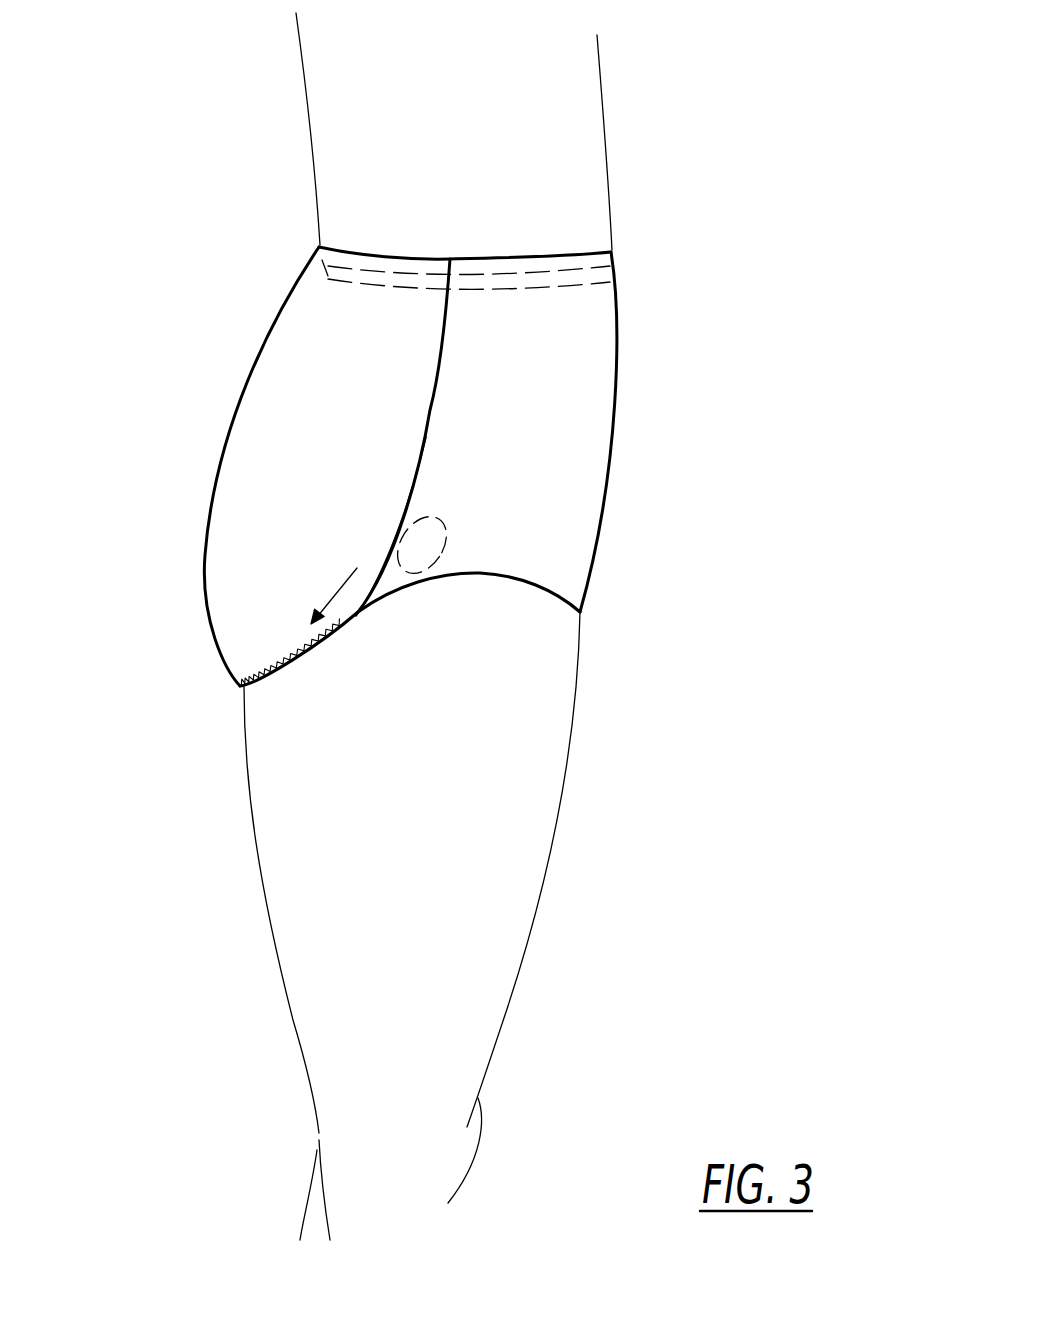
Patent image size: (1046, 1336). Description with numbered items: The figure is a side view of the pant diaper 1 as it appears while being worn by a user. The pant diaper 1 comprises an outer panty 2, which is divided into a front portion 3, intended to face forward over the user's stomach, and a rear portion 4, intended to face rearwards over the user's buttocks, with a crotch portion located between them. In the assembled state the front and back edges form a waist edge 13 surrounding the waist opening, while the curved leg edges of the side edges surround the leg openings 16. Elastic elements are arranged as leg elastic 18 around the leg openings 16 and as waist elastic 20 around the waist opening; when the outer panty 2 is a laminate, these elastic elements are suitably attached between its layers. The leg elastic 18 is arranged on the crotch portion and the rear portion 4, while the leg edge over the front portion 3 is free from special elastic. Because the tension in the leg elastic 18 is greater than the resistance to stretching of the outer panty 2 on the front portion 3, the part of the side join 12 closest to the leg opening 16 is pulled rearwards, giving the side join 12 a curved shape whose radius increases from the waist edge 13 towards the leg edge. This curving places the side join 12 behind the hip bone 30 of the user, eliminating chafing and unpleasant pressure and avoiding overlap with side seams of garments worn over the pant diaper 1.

The pant diaper 1 is at (308, 321).
The outer panty 2 is at (279, 368).
The front portion 3 is at (583, 330).
The rear portion 4 is at (252, 478).
The side join 12 is at (433, 425).
The waist edge 13 is at (535, 256).
The leg openings 16 is at (300, 673).
The leg elastic 18 is at (273, 661).
The waist elastic 20 is at (313, 248).
The hip bone 30 is at (423, 575).